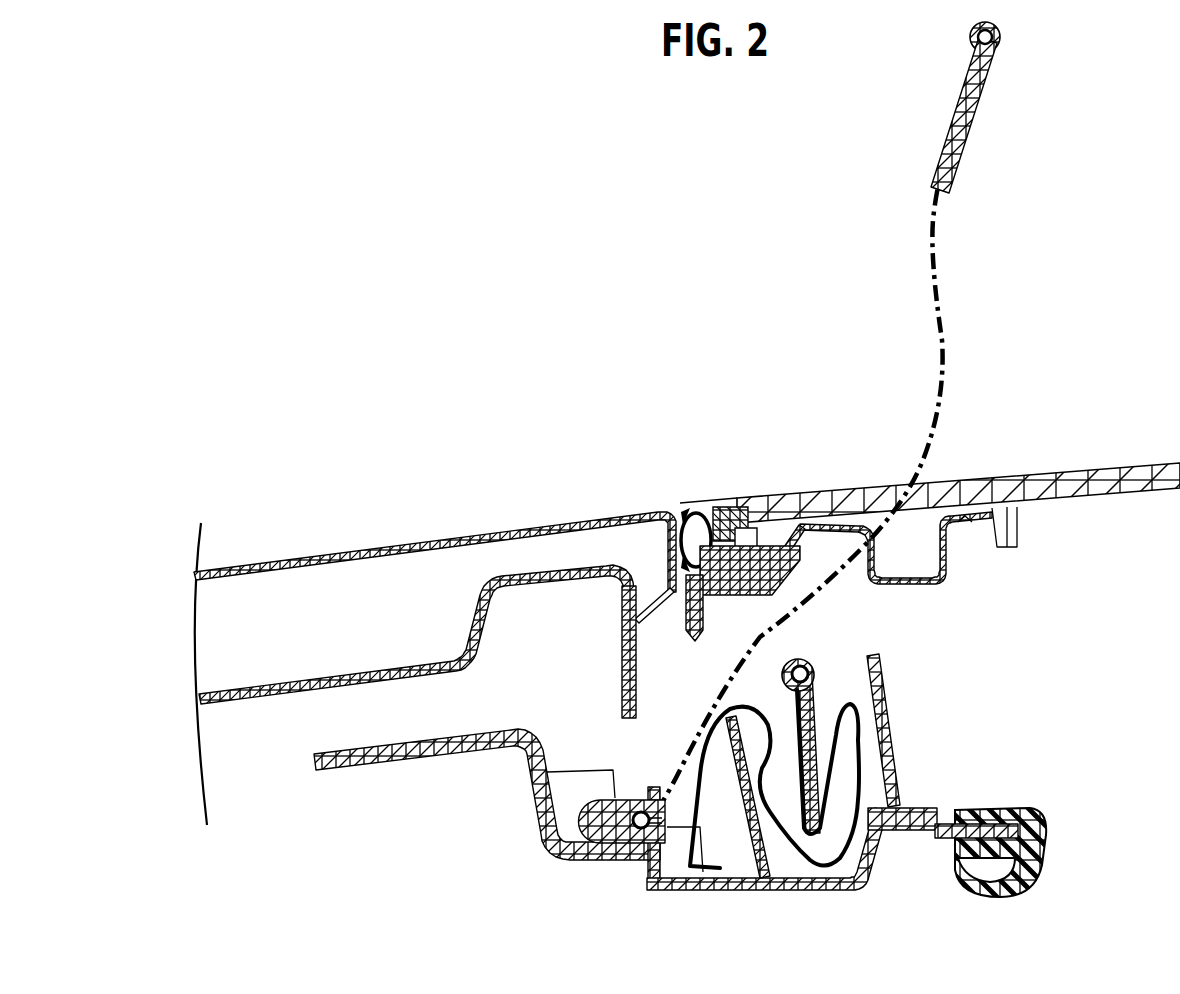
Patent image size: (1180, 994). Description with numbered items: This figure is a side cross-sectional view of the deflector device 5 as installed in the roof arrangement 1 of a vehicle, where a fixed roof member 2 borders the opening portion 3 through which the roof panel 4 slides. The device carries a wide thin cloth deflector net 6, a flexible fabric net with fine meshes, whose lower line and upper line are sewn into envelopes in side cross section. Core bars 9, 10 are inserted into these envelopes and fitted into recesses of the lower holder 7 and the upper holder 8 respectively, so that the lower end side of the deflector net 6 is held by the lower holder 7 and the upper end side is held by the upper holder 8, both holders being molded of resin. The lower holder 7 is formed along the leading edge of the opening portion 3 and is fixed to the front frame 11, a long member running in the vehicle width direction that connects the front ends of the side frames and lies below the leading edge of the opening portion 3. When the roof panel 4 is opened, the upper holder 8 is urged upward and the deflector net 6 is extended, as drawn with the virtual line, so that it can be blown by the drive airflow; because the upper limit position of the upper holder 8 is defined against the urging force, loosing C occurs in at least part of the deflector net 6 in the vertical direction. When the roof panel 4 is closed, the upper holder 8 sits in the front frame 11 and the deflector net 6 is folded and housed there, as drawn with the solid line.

The seat belt webbing 1 is at (990, 381).
The door trim panel 2 is at (592, 518).
The opening portion 3 is at (675, 511).
The roof panel 4 is at (1094, 478).
The deflector device 5 is at (859, 192).
The deflector net 6 is at (846, 703).
The lower holder 7 is at (553, 848).
The upper holder 8 is at (808, 662).
The core bar 9 is at (645, 865).
The core bar 10 is at (782, 686).
The front frame 11 is at (730, 890).
The loosing C is at (950, 428).